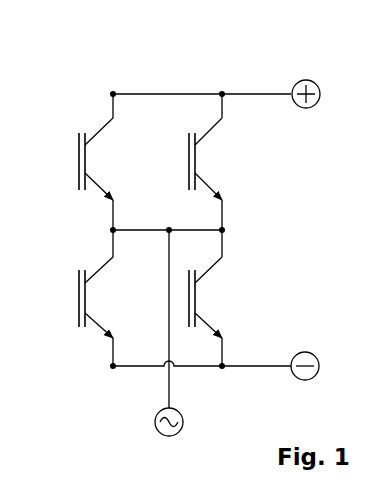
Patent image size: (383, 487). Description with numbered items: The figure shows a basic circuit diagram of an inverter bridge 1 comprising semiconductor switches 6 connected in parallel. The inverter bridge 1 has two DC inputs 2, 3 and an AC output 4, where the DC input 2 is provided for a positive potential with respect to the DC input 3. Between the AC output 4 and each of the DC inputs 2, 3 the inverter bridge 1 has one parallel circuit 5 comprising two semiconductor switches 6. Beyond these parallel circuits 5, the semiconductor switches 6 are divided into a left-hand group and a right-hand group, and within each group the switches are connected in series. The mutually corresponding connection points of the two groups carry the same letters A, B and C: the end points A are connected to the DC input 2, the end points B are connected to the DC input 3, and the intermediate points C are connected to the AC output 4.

The inverter bridge 1 is at (272, 57).
The DC input 2 is at (318, 84).
The DC input 3 is at (318, 356).
The AC output 4 is at (180, 431).
The parallel circuit 5 is at (68, 162).
The semiconductor switch 6 is at (92, 118).